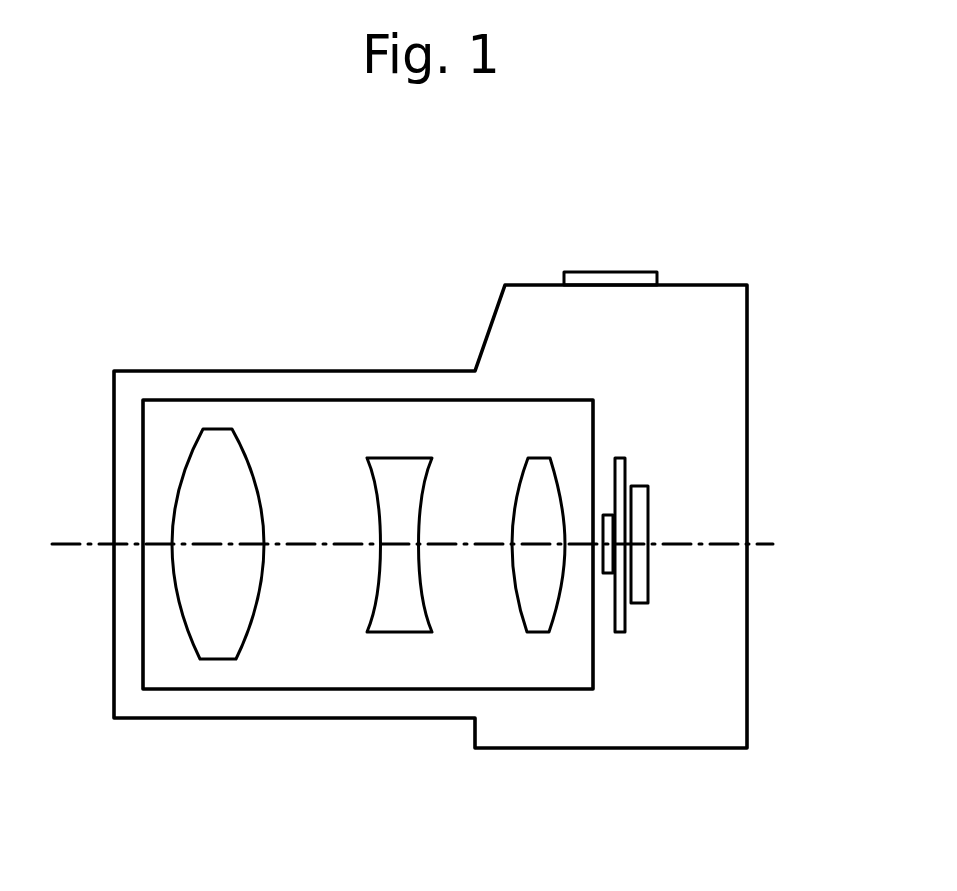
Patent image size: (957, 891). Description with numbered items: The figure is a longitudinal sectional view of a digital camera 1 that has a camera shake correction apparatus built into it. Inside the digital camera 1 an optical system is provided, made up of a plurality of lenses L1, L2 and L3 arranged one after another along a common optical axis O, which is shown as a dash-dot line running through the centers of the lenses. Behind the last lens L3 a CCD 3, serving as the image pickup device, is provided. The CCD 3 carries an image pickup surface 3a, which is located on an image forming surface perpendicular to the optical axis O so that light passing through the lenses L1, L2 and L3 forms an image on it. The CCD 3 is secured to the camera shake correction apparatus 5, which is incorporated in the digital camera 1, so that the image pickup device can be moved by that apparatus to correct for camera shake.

The digital camera 1 is at (762, 282).
The optical axis O is at (692, 545).
The lens L1 is at (218, 448).
The lens L2 is at (392, 470).
The lens L3 is at (542, 473).
The camera shake correction apparatus 5 is at (627, 445).
The image pickup surface 3a is at (600, 556).
The CCD (image pickup device) 3 is at (603, 565).